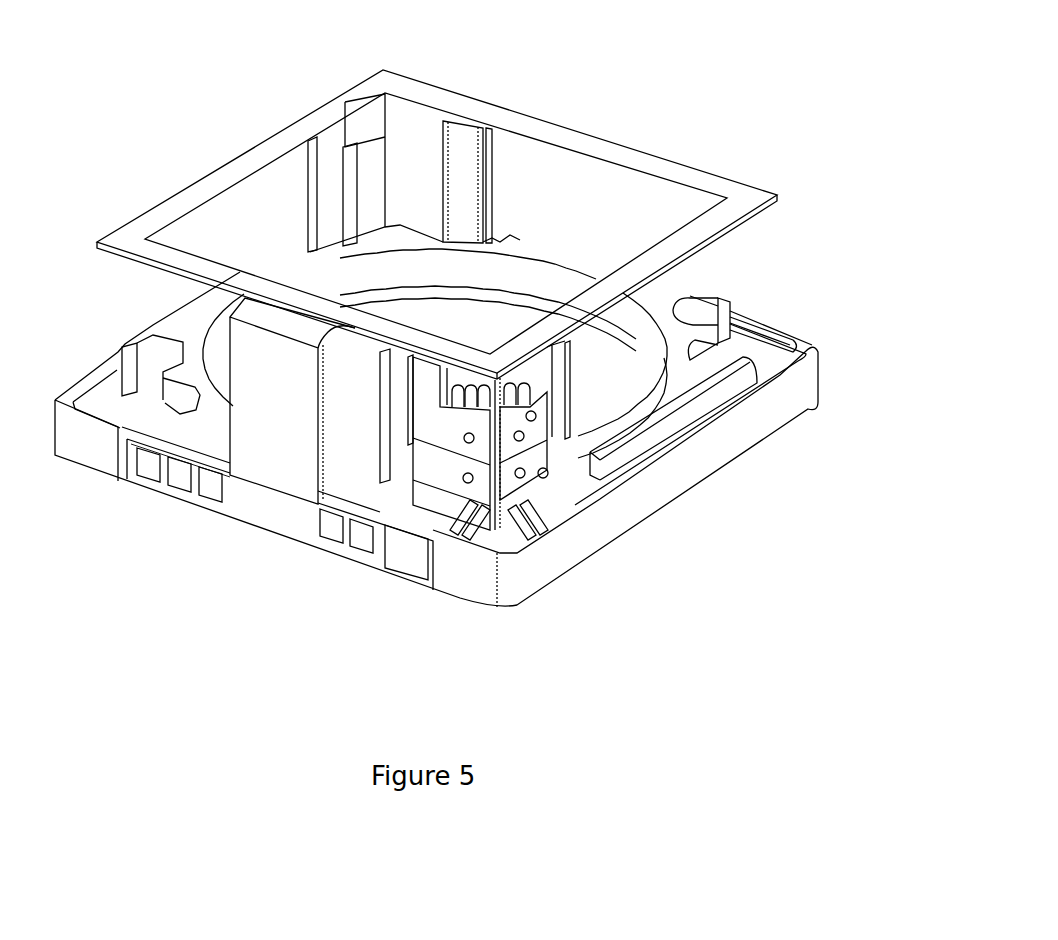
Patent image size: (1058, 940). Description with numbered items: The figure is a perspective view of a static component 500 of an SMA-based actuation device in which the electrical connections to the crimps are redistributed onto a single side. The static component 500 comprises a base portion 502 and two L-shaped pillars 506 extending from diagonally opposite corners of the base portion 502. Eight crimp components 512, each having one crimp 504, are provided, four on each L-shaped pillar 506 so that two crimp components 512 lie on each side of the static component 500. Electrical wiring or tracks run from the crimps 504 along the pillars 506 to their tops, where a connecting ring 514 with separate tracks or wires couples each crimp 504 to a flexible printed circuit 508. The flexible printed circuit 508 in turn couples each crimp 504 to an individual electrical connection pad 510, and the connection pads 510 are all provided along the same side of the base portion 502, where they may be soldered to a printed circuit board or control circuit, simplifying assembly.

The static component 500 is at (231, 75).
The base portion 502 is at (582, 542).
The crimp 504 is at (523, 384).
The L-shaped pillar 506 is at (467, 153).
The flexible printed circuit 508 is at (272, 415).
The electrical connection pad 510 is at (182, 482).
The crimp component 512 is at (400, 468).
The connecting ring 514 is at (617, 148).